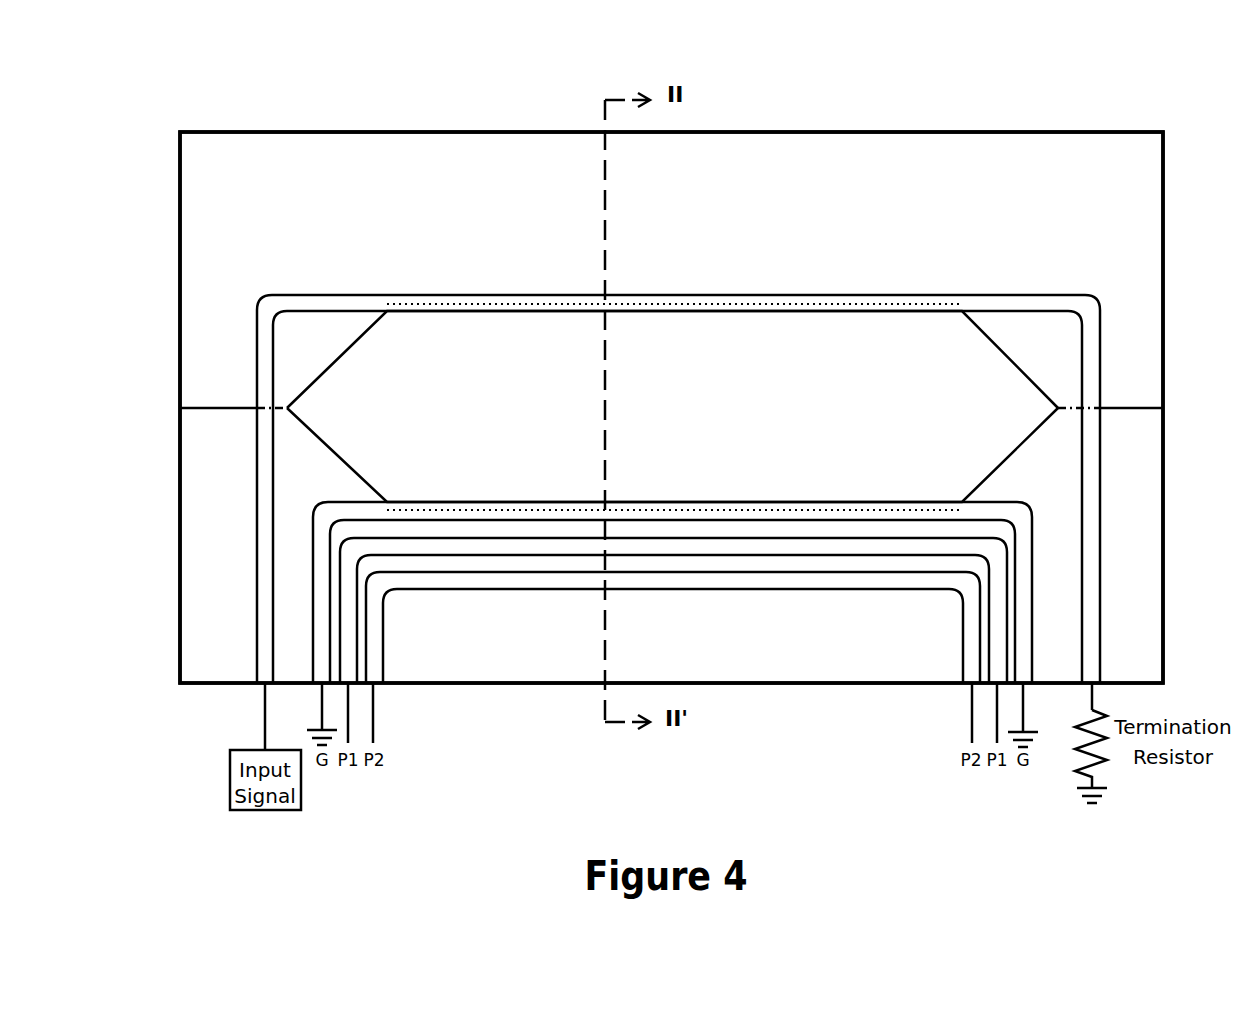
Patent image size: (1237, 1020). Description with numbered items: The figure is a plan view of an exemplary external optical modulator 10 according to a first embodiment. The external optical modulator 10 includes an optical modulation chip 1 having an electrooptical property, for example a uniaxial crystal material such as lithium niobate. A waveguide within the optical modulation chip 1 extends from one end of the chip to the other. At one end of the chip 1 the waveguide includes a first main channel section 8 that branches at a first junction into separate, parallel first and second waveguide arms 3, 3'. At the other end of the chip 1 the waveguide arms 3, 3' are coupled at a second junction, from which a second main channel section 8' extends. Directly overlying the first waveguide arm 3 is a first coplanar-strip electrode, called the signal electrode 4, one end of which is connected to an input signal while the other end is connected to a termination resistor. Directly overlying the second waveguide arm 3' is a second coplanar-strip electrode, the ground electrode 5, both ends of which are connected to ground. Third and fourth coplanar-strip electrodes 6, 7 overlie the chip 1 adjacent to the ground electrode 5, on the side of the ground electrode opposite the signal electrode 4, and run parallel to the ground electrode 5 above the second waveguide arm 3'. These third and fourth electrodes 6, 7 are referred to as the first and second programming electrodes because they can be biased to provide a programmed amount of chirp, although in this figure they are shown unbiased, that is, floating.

The external optical modulator 10 is at (185, 115).
The optical modulation chip 1 is at (1037, 148).
The first waveguide arm 3 is at (672, 327).
The second waveguide arm 3' is at (672, 459).
The first coplanar-strip electrode 4 is at (977, 302).
The second coplanar-strip electrode 5 is at (1023, 562).
The third coplanar-strip electrode 6 is at (997, 615).
The fourth coplanar-strip electrode 7 is at (970, 667).
The first main channel section 8 is at (233, 377).
The second main channel section 8' is at (1110, 376).